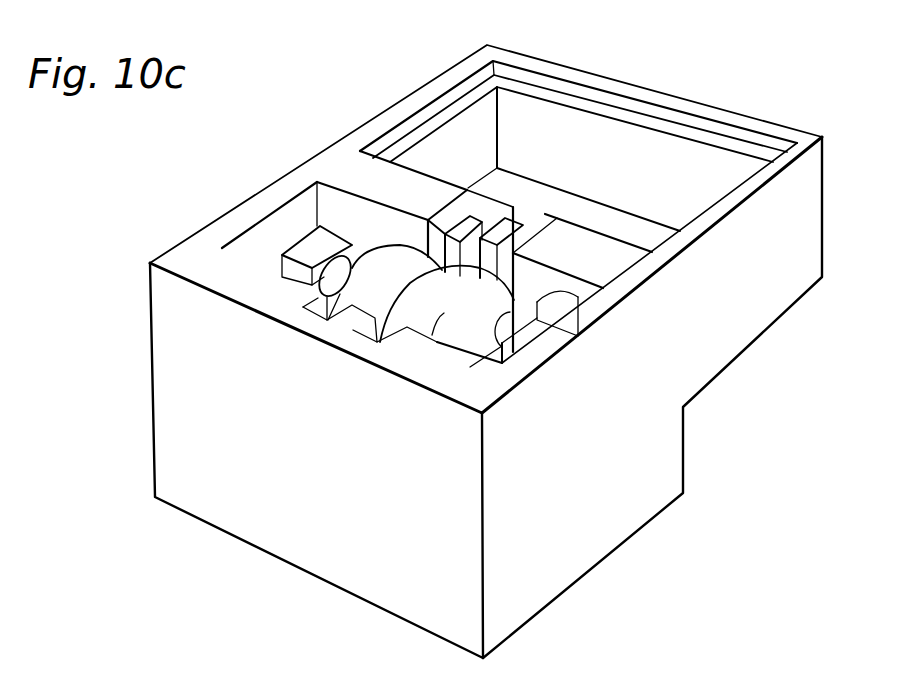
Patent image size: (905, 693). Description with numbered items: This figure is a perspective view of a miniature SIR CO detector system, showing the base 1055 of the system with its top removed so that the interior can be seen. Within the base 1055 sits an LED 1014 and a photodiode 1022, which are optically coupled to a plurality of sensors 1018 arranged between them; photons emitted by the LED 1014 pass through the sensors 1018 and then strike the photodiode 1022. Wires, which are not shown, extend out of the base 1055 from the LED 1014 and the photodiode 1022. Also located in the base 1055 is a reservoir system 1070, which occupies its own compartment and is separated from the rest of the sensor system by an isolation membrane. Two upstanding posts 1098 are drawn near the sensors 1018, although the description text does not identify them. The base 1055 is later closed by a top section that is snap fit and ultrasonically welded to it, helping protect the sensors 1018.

The base 1055 is at (623, 507).
The reservoir system 1070 is at (645, 155).
The photodiode 1022 is at (310, 250).
The posts 1098 is at (507, 230).
The LED 1014 is at (585, 300).
The sensors 1018 is at (452, 330).